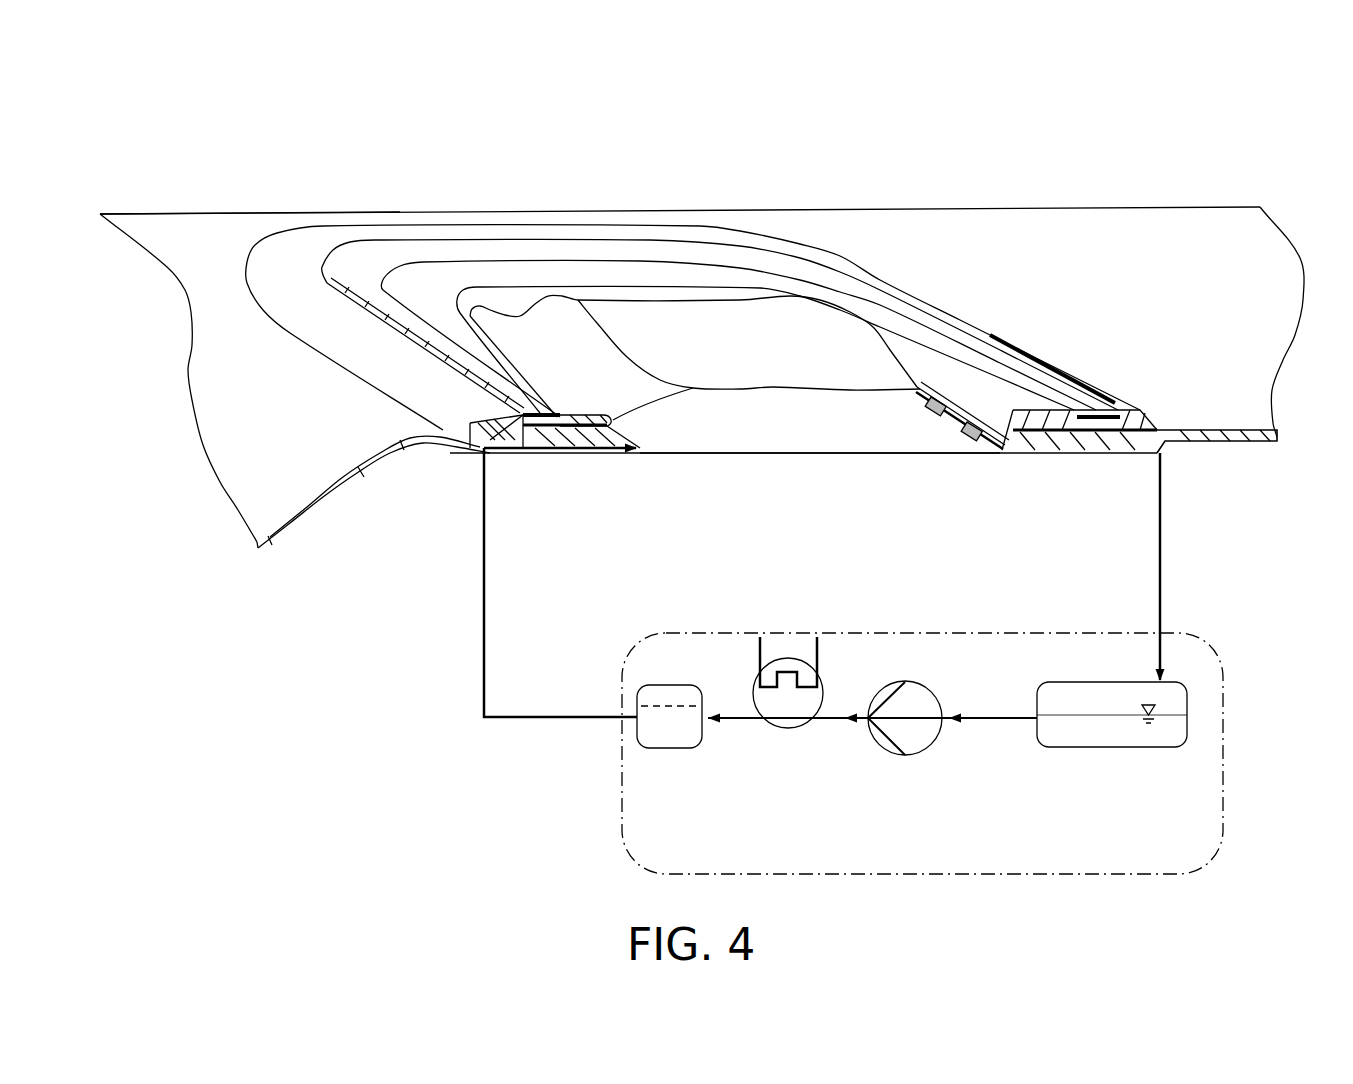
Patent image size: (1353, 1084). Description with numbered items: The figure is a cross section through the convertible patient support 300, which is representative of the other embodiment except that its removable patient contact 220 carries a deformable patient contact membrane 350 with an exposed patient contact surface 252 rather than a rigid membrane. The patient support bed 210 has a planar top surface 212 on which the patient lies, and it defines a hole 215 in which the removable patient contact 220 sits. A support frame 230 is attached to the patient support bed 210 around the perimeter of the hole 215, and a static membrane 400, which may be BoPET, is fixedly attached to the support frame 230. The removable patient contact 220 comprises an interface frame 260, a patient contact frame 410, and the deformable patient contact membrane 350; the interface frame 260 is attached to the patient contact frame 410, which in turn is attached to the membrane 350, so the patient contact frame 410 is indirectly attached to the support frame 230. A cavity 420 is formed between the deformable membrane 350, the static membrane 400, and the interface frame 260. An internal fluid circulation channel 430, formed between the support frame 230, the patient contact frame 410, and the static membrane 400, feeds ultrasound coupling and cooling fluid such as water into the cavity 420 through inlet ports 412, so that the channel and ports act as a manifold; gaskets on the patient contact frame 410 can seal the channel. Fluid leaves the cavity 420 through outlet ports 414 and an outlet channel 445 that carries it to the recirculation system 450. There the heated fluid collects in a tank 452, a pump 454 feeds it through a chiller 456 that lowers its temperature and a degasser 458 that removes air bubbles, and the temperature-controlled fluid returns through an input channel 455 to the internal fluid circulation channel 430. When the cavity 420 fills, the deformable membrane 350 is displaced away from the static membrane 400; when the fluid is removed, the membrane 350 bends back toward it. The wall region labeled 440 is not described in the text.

The convertible patient support 300 is at (322, 70).
The patient support bed 210 is at (1243, 341).
The top surface 212 is at (345, 408).
The hole 215 is at (638, 471).
The removable patient contact 220 is at (766, 165).
The support frame 230 is at (417, 378).
The exposed patient contact surface 252 is at (755, 366).
The interface frame 260 is at (396, 247).
The deformable patient contact membrane 350 is at (712, 346).
The static membrane 400 is at (723, 462).
The patient contact frame 410 is at (496, 270).
The inlet port 412 is at (621, 436).
The outlet port 414 is at (916, 404).
The cavity 420 is at (930, 447).
The internal fluid circulation channel 430 is at (560, 440).
The cavity bottom wall 440 is at (836, 446).
The outlet channel 445 is at (1147, 535).
The ultrasound coupling and cooling fluid recirculation system 450 is at (895, 633).
The tank 452 is at (1066, 768).
The pump 454 is at (867, 763).
The input channel 455 is at (477, 527).
The chiller 456 is at (751, 736).
The degasser 458 is at (627, 729).